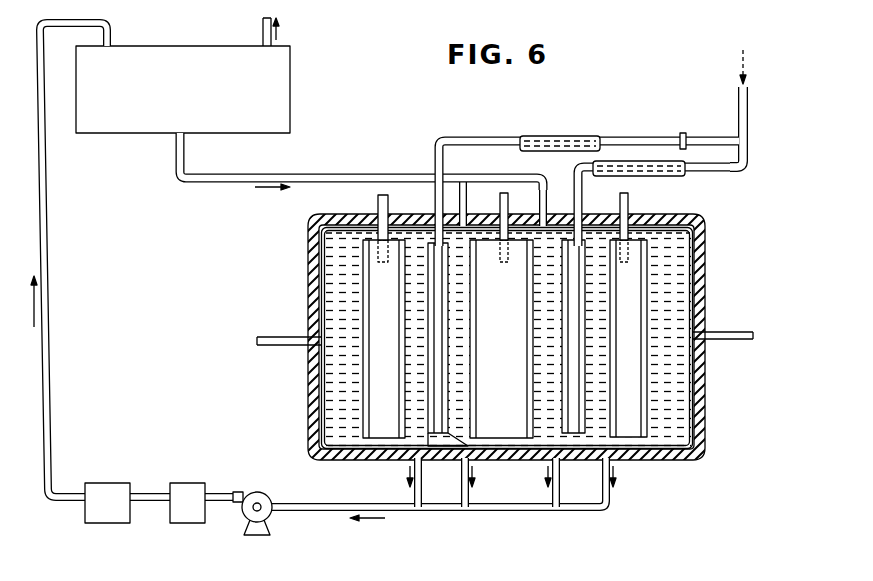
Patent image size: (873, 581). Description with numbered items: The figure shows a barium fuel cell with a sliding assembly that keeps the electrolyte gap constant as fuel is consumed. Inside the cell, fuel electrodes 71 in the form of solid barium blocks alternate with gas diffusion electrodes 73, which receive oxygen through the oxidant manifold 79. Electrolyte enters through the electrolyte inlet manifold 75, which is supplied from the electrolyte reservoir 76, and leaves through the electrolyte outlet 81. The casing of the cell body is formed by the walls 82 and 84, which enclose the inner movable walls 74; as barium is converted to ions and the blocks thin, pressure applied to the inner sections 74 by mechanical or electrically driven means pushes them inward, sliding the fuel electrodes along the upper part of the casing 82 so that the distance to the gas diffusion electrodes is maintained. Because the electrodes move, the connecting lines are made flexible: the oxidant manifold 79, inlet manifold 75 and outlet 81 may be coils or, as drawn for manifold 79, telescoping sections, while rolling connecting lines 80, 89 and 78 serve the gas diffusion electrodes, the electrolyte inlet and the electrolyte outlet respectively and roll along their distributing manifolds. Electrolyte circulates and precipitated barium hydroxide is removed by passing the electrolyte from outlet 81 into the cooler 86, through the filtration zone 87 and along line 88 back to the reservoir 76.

The fuel electrodes 71 is at (396, 337).
The gas diffusion electrodes 73 is at (566, 240).
The inner movable walls 74 is at (322, 367).
The electrolyte inlet manifold 75 is at (198, 182).
The electrolyte reservoir 76 is at (157, 52).
The rolling connecting lines 78 is at (462, 471).
The oxidant manifold 79 is at (749, 102).
The rolling connecting lines 80 is at (435, 162).
The electrolyte outlet 81 is at (519, 512).
The cell casing 82 is at (334, 216).
The casing wall 84 is at (308, 270).
The cooler 86 is at (183, 524).
The filtration zone 87 is at (97, 524).
The line 88 is at (47, 338).
The rolling connecting lines 89 is at (463, 197).